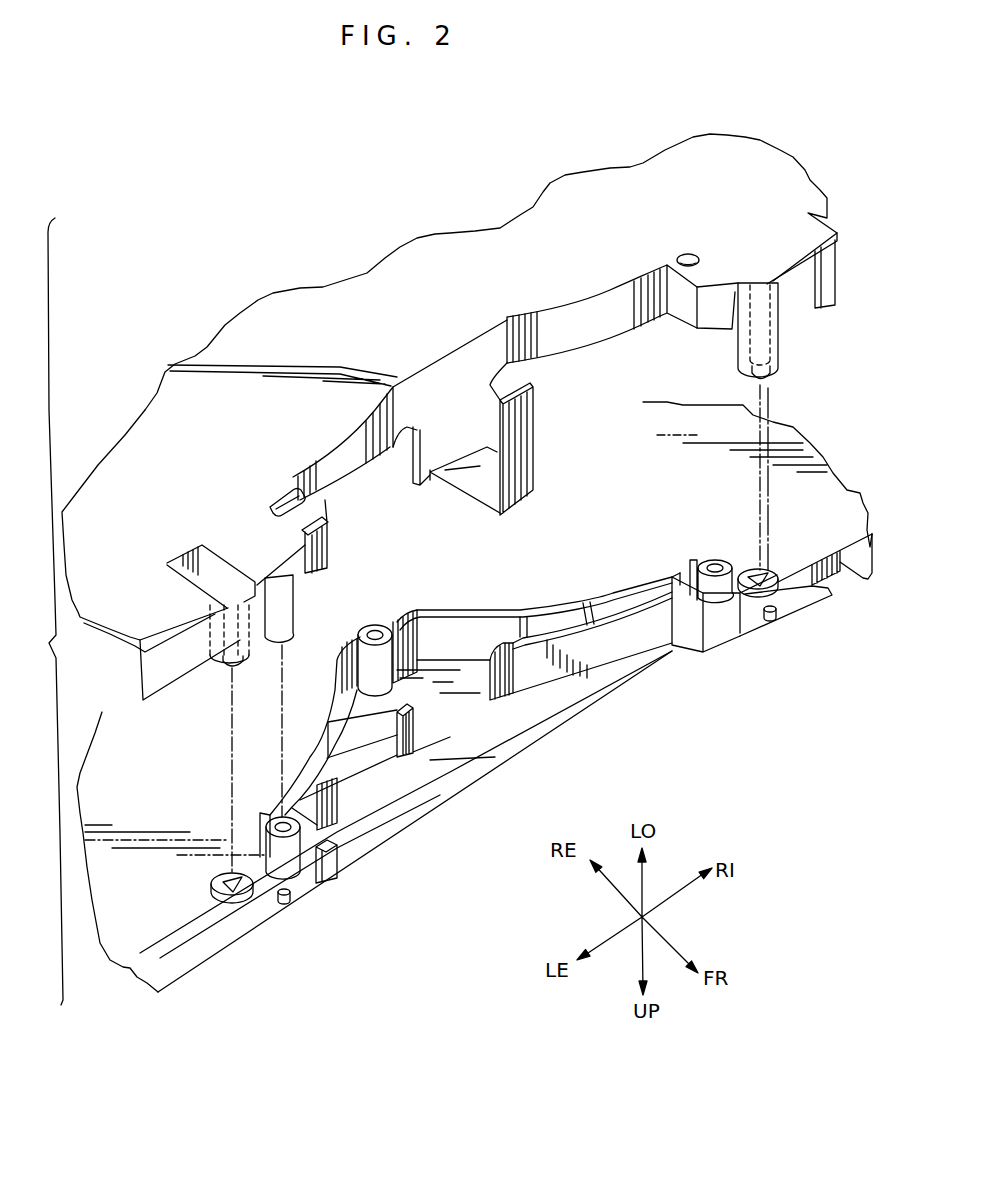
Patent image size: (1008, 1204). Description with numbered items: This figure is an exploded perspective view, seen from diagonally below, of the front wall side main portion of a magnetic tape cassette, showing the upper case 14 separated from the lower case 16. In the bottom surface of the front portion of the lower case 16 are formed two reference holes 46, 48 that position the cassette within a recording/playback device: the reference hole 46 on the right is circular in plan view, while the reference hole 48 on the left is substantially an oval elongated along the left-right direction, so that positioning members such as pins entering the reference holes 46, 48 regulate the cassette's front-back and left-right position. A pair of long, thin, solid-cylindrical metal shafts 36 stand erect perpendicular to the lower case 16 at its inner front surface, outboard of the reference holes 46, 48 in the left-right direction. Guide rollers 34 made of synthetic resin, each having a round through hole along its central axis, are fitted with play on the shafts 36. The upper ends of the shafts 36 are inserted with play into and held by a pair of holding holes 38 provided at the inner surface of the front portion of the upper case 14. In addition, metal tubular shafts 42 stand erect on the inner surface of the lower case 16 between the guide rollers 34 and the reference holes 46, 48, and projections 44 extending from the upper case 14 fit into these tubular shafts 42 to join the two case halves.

The upper case 14 is at (190, 965).
The lower case 16 is at (713, 155).
The guide roller 34 is at (251, 662).
The shaft 36 is at (226, 660).
The holding hole 38 is at (238, 898).
The tubular shaft 42 is at (293, 622).
The projection 44 is at (292, 898).
The reference hole 46 is at (692, 250).
The reference hole 48 is at (287, 490).